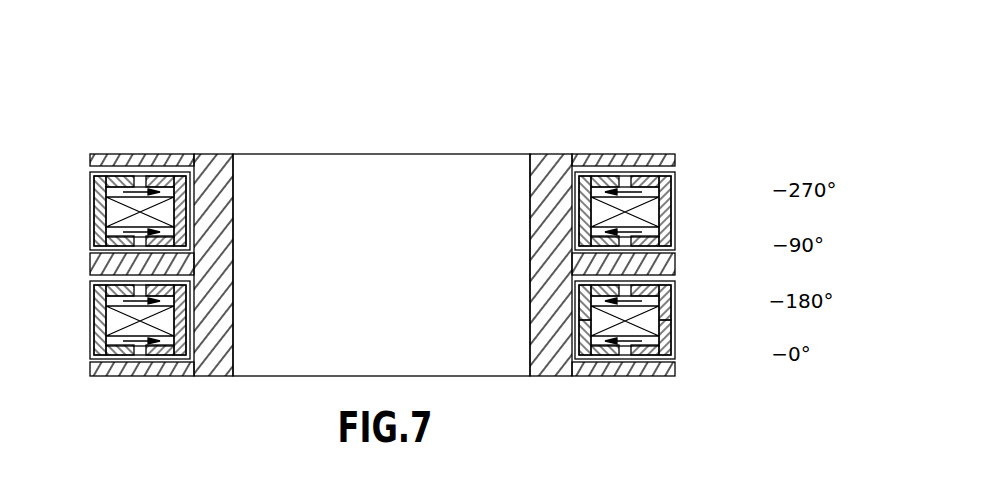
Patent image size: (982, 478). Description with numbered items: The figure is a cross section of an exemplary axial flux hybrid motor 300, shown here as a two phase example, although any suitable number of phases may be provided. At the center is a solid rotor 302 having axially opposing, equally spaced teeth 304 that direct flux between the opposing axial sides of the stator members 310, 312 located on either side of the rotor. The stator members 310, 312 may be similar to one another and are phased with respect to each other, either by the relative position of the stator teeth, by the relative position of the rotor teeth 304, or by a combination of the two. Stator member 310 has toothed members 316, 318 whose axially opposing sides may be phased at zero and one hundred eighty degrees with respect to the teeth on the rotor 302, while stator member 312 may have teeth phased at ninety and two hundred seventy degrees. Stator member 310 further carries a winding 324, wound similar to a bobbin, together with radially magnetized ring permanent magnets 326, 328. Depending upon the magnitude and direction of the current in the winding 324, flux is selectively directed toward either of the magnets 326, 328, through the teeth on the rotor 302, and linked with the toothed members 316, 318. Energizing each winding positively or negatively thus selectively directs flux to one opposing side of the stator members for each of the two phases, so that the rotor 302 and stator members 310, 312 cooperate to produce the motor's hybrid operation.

The axial flux hybrid motor 300 is at (398, 243).
The solid rotor 302 is at (258, 153).
The teeth 304 is at (90, 163).
The stator member 310 is at (615, 346).
The stator member 312 is at (683, 210).
The toothed member 316 is at (673, 348).
The toothed member 318 is at (587, 348).
The winding 324 is at (593, 302).
The radially magnetized ring permanent magnet 326 is at (600, 320).
The radially magnetized ring permanent magnet 328 is at (642, 342).